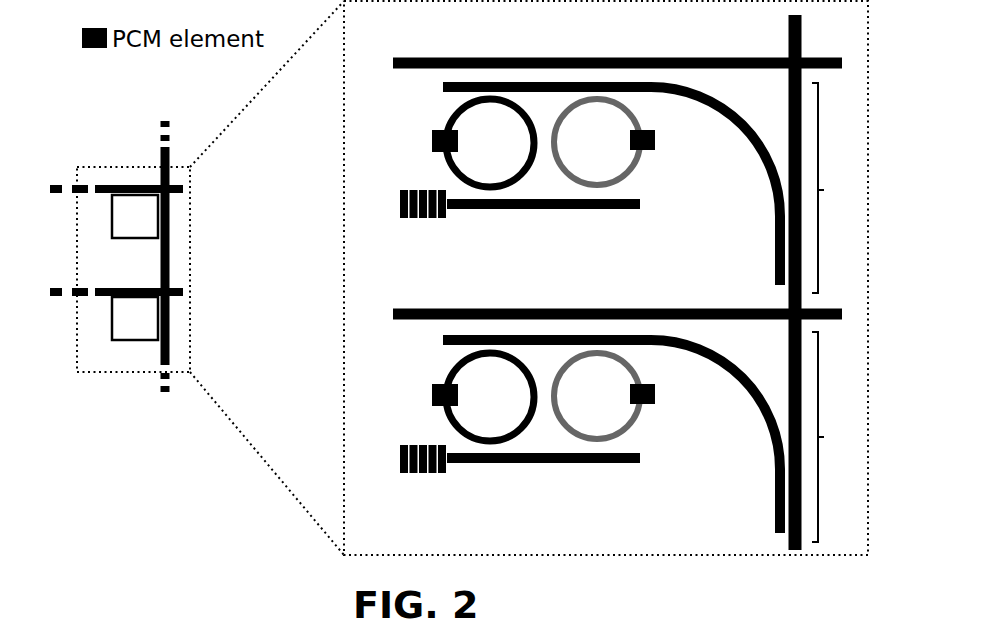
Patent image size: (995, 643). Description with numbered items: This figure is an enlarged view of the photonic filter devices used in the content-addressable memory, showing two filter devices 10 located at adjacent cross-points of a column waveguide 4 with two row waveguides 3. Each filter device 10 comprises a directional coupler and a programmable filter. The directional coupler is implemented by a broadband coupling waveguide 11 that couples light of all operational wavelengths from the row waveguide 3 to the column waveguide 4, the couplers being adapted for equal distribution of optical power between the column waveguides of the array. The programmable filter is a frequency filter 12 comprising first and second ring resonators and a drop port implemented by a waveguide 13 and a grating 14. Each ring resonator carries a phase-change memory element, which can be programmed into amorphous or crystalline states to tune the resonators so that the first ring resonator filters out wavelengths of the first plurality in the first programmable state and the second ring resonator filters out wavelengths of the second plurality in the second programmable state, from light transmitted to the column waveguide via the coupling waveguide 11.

The row waveguide 3 is at (830, 54).
The column waveguide 4 is at (788, 37).
The filter device 10 is at (484, 312).
The broadband coupling waveguide 11 is at (733, 117).
The frequency filter 12 is at (397, 97).
The drop port waveguide 13 is at (641, 203).
The grating 14 is at (401, 219).